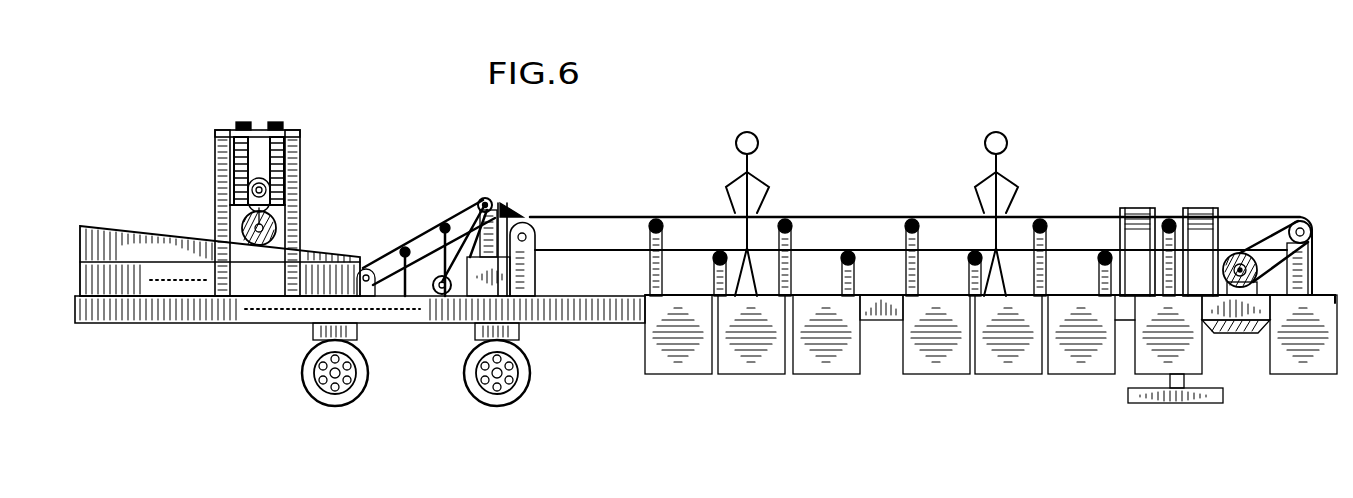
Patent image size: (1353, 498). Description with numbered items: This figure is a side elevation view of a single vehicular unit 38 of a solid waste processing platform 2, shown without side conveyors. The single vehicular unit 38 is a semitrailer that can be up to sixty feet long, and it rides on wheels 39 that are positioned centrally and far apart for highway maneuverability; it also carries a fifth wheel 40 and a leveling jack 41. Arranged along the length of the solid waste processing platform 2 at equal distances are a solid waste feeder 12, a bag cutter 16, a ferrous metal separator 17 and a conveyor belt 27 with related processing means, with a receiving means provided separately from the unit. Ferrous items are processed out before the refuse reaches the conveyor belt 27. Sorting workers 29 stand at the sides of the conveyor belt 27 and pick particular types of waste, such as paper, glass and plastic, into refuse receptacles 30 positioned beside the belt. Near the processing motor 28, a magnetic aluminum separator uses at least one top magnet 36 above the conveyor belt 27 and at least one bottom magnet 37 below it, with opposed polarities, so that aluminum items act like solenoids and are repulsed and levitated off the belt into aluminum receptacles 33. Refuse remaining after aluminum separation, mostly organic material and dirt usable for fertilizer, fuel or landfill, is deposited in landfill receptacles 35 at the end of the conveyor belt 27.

The single vehicular unit 38 is at (160, 25).
The solid waste processing platform 2 is at (617, 328).
The wheels 39 is at (470, 377).
The solid waste feeder 12 is at (185, 235).
The bag cutter 16 is at (262, 106).
The ferrous metal separator 17 is at (457, 169).
The conveyor belt 27 is at (688, 215).
The sorting worker 29 is at (985, 143).
The top magnet 36 is at (1207, 208).
The bottom magnet 37 is at (1180, 208).
The processing motor 28 is at (1240, 262).
The refuse receptacles 30 is at (950, 355).
The aluminum receptacles 33 is at (1163, 343).
The leveling jack 41 is at (1184, 400).
The fifth wheel 40 is at (1247, 333).
The landfill receptacles 35 is at (1295, 355).